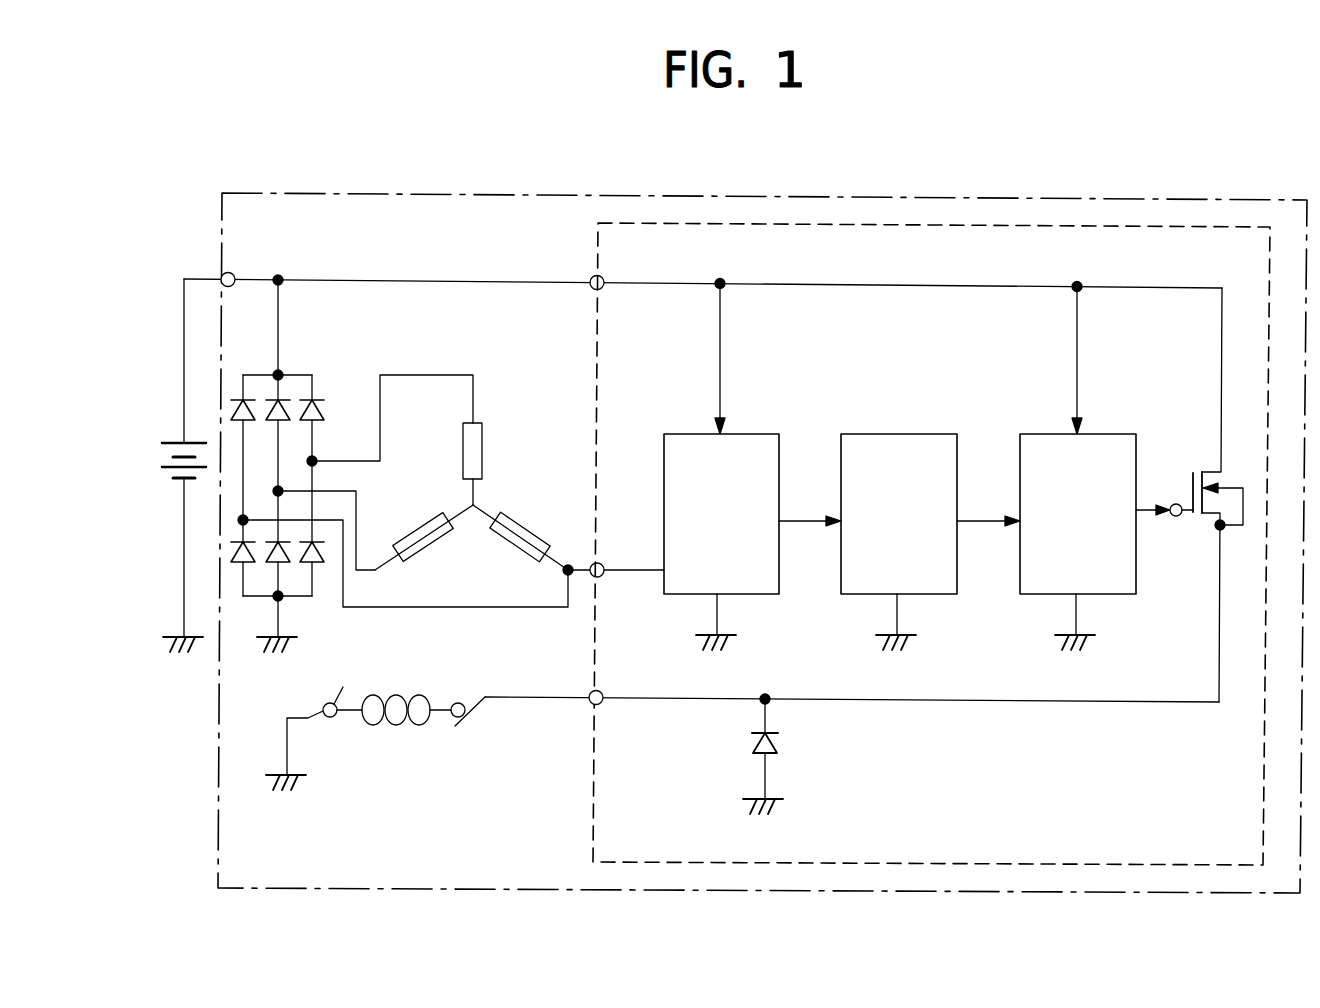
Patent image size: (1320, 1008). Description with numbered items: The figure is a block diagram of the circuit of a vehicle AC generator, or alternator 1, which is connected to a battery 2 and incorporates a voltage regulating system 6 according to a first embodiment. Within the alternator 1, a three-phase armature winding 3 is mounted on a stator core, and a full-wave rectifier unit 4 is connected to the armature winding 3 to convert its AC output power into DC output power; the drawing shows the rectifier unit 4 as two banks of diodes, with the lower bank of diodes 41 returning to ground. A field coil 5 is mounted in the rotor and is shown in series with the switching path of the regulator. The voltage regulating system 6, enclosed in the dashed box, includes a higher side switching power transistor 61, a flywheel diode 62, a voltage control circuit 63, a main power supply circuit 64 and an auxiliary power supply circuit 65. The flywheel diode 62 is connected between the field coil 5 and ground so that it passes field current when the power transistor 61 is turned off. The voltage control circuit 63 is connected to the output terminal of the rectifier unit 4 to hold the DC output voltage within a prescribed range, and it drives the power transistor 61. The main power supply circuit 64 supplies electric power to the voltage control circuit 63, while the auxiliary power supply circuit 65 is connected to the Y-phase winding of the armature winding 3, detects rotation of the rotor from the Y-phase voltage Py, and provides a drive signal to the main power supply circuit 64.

The alternator 1 is at (366, 193).
The battery 2 is at (178, 442).
The three-phase armature winding 3 is at (465, 415).
The full-wave rectifier unit 4 is at (320, 397).
The rectifier lower diodes 41 is at (310, 598).
The field coil 5 is at (395, 728).
The voltage regulating system 6 is at (597, 259).
The higher side switching power transistor 61 is at (1210, 465).
The flywheel diode 62 is at (780, 743).
The voltage control circuit 63 is at (1078, 542).
The main power supply circuit 64 is at (899, 542).
The auxiliary power supply circuit 65 is at (721, 542).